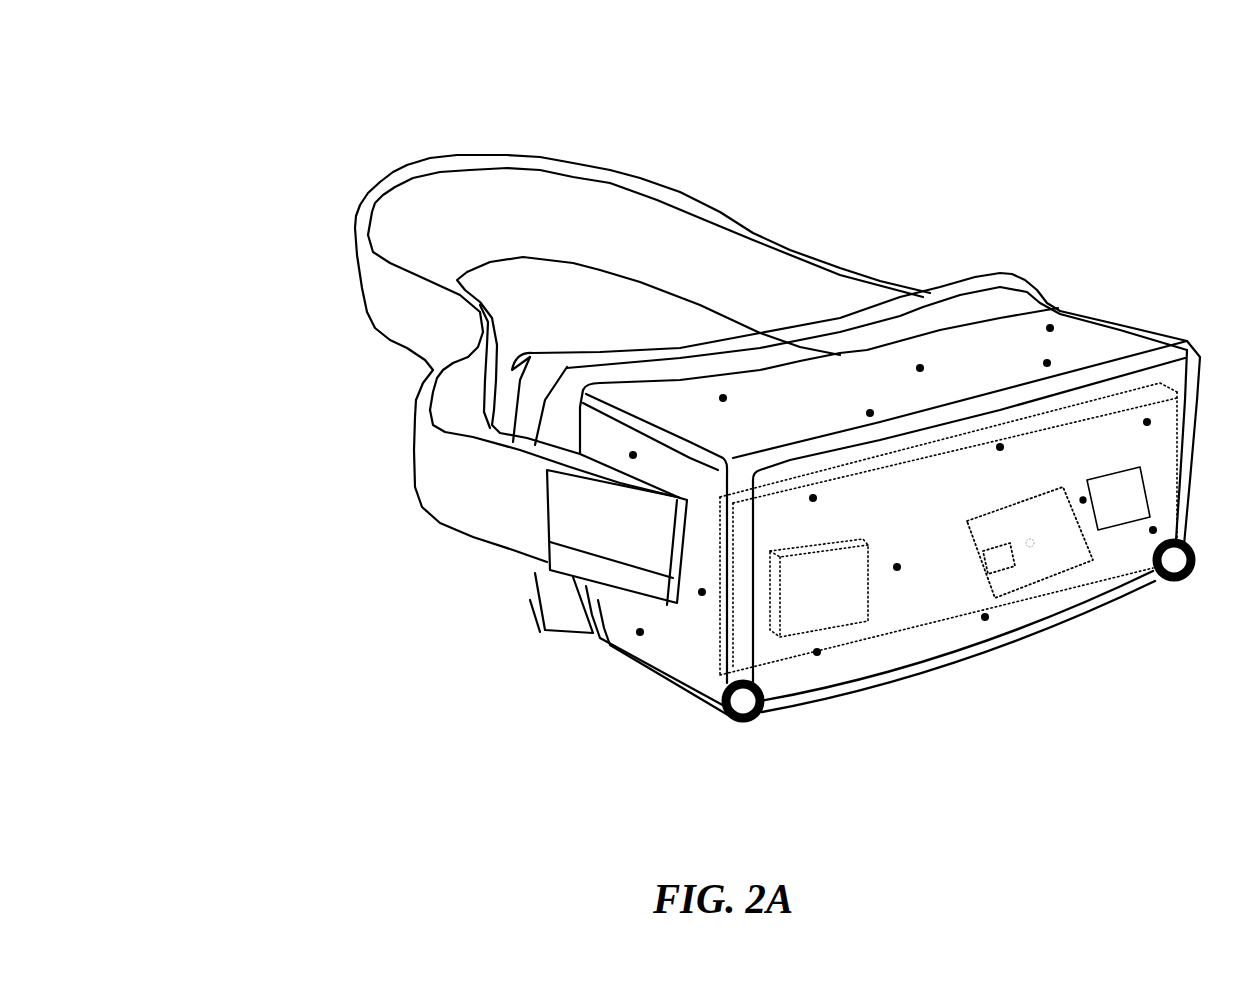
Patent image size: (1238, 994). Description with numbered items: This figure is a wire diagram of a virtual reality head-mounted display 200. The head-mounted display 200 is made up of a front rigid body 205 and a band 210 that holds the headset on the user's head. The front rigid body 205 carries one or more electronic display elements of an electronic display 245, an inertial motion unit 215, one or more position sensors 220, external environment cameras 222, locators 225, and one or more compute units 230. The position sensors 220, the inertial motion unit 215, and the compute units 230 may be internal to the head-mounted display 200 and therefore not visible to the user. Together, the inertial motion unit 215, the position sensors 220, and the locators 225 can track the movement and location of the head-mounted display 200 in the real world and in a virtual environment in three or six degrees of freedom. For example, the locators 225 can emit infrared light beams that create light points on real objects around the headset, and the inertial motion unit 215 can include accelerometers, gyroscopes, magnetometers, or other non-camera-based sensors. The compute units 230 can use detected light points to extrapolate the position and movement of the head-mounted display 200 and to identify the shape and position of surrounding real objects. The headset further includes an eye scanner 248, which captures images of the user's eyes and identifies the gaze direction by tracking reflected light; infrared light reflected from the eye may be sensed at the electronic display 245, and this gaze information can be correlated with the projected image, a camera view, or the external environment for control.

The virtual reality head-mounted display 200 is at (222, 128).
The front rigid body 205 is at (808, 707).
The band 210 is at (361, 292).
The inertial motion unit 215 is at (967, 526).
The position sensors 220 is at (993, 563).
The external environment cameras 222 is at (740, 724).
The locators 225 is at (865, 413).
The compute units 230 is at (827, 542).
The electronic display 245 is at (1177, 473).
The eye scanner 248 is at (1088, 481).